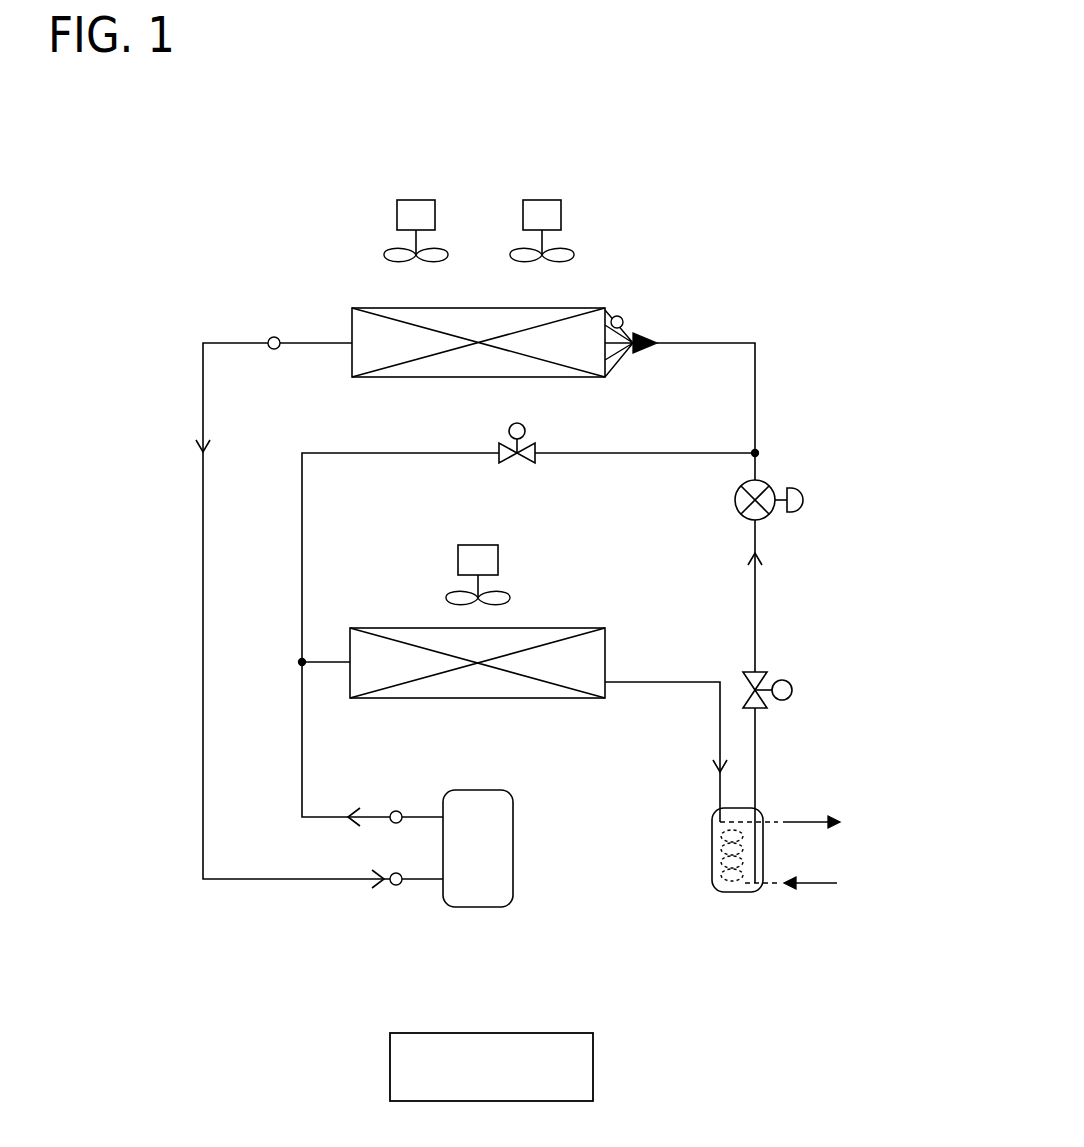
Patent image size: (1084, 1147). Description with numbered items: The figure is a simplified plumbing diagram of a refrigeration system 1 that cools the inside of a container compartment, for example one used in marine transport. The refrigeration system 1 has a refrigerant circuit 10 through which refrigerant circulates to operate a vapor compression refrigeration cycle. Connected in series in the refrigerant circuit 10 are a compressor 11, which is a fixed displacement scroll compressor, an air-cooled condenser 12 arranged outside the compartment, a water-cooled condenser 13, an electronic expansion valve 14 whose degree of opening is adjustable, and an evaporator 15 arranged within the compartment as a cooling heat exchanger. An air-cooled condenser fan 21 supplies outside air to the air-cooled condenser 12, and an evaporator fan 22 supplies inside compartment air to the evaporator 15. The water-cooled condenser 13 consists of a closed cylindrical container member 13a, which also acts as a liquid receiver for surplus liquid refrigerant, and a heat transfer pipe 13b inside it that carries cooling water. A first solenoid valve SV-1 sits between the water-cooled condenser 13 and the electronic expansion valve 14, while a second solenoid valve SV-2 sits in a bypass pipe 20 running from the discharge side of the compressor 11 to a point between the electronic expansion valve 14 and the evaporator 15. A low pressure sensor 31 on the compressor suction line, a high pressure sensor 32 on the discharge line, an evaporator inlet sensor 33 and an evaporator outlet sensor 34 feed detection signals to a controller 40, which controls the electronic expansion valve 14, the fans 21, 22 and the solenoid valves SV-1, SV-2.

The refrigeration system 1 is at (792, 172).
The refrigerant circuit 10 is at (158, 467).
The compressor 11 is at (513, 830).
The air-cooled condenser 12 is at (568, 700).
The water-cooled condenser 13 is at (765, 807).
The container member 13a is at (712, 880).
The heat transfer pipe 13b is at (745, 893).
The electronic expansion valve 14 is at (762, 485).
The evaporator 15 is at (352, 358).
The bypass pipe 20 is at (372, 455).
The air-cooled condenser fan 21 is at (498, 560).
The evaporator fan 22 is at (541, 200).
The low pressure sensor 31 is at (396, 888).
The high pressure sensor 32 is at (396, 811).
The evaporator inlet sensor 33 is at (617, 316).
The evaporator outlet sensor 34 is at (274, 337).
The first solenoid valve SV-1 is at (783, 680).
The second solenoid valve SV-2 is at (525, 428).
The controller 40 is at (593, 1068).